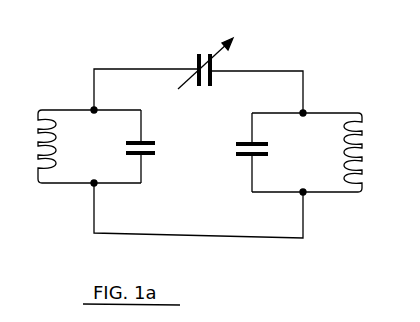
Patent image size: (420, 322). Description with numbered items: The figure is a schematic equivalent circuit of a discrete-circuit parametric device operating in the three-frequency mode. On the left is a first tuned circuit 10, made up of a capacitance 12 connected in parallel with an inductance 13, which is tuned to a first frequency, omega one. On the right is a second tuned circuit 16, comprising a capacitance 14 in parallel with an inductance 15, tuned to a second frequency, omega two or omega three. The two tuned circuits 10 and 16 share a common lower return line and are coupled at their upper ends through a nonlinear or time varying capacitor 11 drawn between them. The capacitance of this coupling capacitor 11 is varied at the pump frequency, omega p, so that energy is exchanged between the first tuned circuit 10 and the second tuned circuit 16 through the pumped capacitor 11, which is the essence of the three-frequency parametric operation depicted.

The first tuned circuit 10 is at (79, 181).
The nonlinear or time varying capacitor 11 is at (205, 55).
The capacitance 12 is at (138, 148).
The inductance 13 is at (37, 153).
The capacitance 14 is at (235, 149).
The inductance 15 is at (355, 136).
The second tuned circuit 16 is at (314, 185).